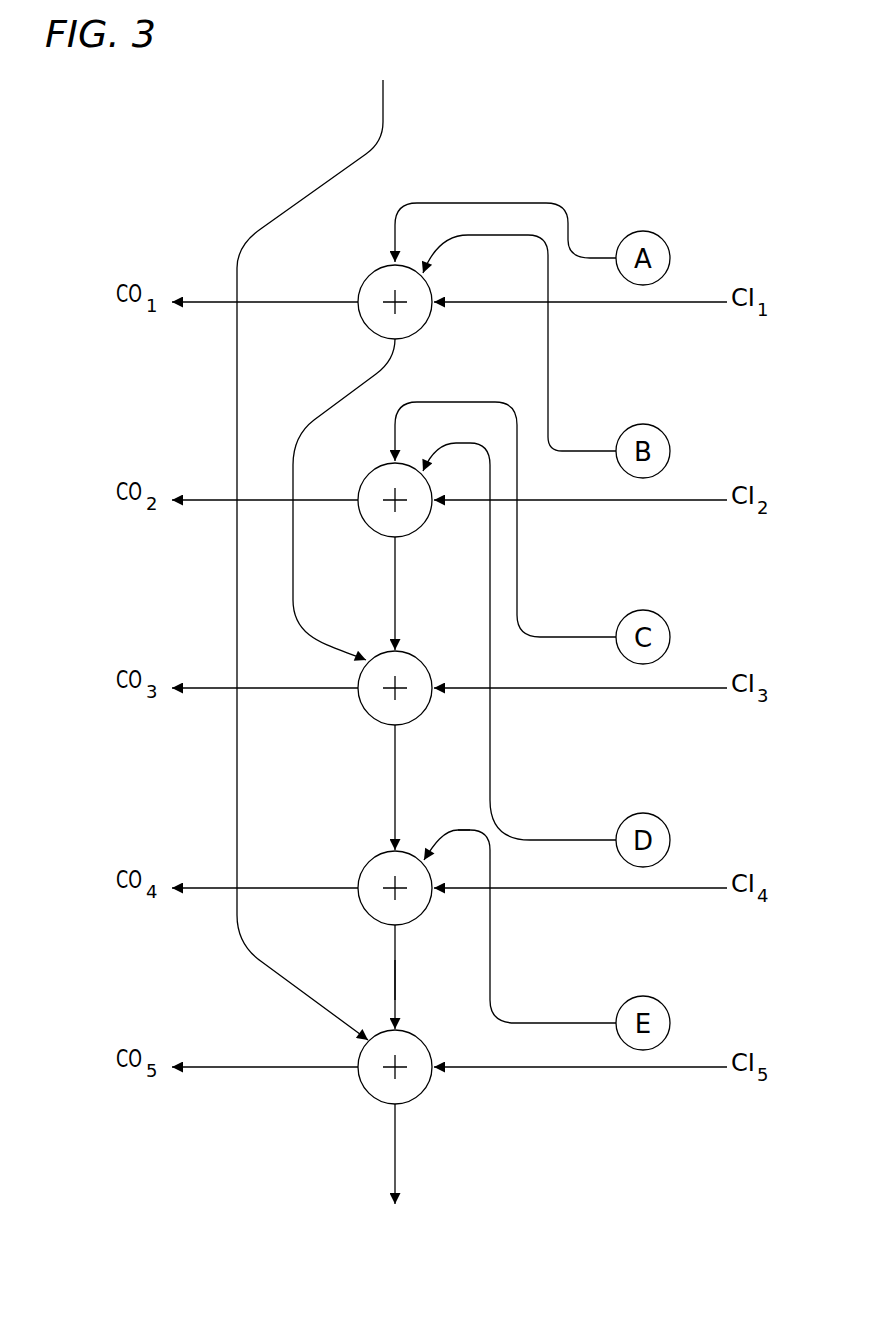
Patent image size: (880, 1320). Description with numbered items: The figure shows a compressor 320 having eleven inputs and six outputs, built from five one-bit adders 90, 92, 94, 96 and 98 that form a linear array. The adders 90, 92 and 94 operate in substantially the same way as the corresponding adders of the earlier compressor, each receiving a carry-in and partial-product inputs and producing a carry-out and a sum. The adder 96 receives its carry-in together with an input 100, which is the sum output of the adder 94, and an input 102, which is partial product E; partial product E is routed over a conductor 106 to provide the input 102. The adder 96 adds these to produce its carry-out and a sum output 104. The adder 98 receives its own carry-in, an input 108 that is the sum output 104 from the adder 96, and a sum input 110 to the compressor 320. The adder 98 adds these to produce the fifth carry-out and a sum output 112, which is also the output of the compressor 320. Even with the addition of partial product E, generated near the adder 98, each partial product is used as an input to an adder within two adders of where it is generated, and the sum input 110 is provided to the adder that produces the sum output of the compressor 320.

The adder 90 is at (361, 318).
The adder 92 is at (363, 520).
The adder 94 is at (364, 710).
The adder 96 is at (364, 910).
The adder 98 is at (363, 1090).
The input 100 is at (394, 787).
The input 102 is at (458, 829).
The sum output 104 is at (397, 946).
The conductor 106 is at (492, 962).
The input 108 is at (397, 995).
The sum input 110 is at (302, 194).
The sum output 112 is at (397, 1151).
The compressor 320 is at (586, 1182).